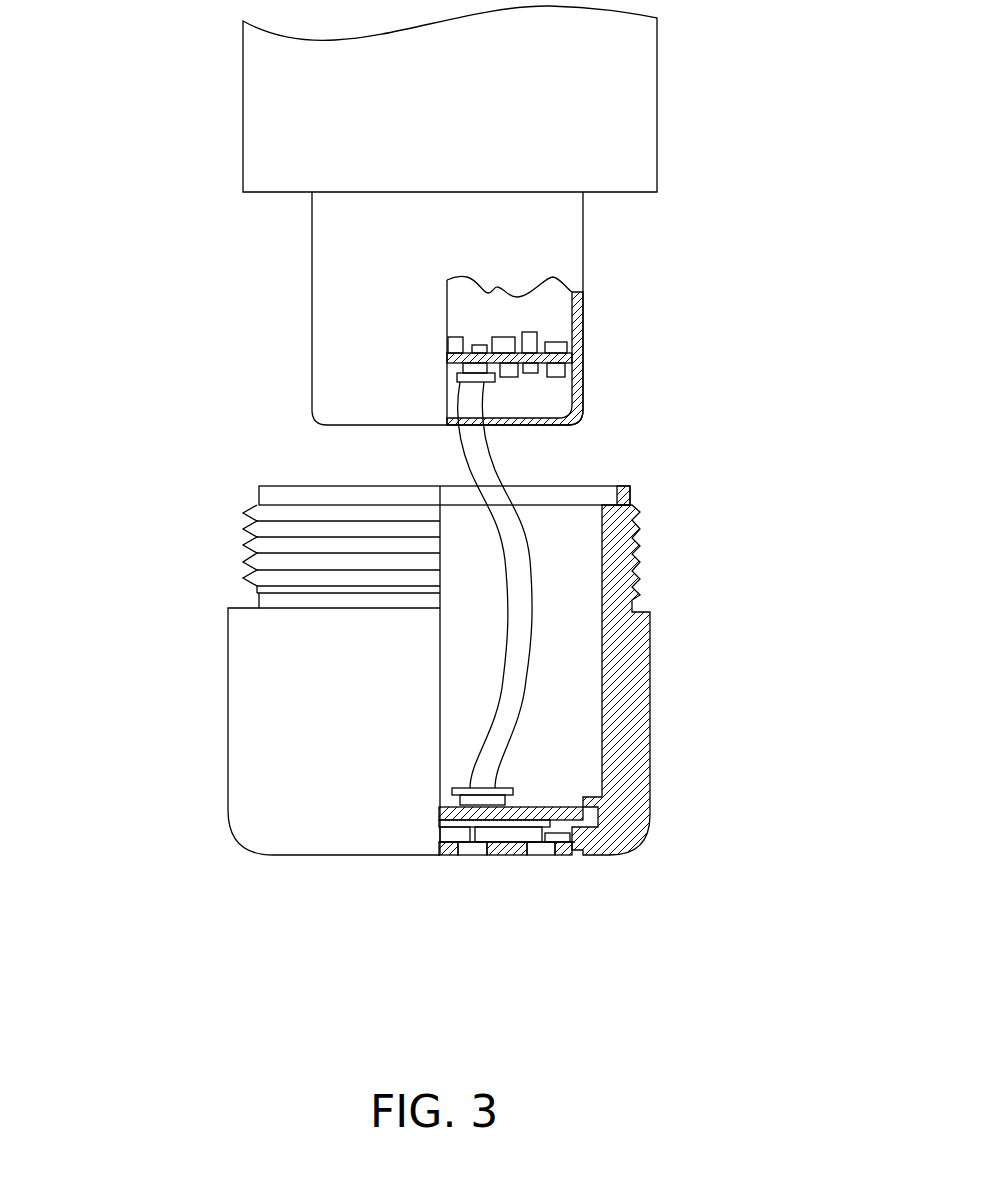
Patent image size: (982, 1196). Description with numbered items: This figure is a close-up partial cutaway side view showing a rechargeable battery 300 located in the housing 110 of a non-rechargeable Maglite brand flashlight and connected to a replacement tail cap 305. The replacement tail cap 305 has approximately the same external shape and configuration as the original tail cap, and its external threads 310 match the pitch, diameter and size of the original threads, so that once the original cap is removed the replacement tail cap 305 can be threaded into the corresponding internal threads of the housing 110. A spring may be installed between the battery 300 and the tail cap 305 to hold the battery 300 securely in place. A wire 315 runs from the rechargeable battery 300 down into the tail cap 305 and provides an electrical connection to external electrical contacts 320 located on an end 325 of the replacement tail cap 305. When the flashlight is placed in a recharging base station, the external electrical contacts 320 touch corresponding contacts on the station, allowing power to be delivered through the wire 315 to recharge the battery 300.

The housing 110 is at (617, 142).
The rechargeable battery 300 is at (565, 255).
The replacement tail cap 305 is at (255, 737).
The external threads 310 is at (247, 558).
The wire 315 is at (487, 472).
The external electrical contacts 320 is at (473, 850).
The end 325 is at (377, 724).